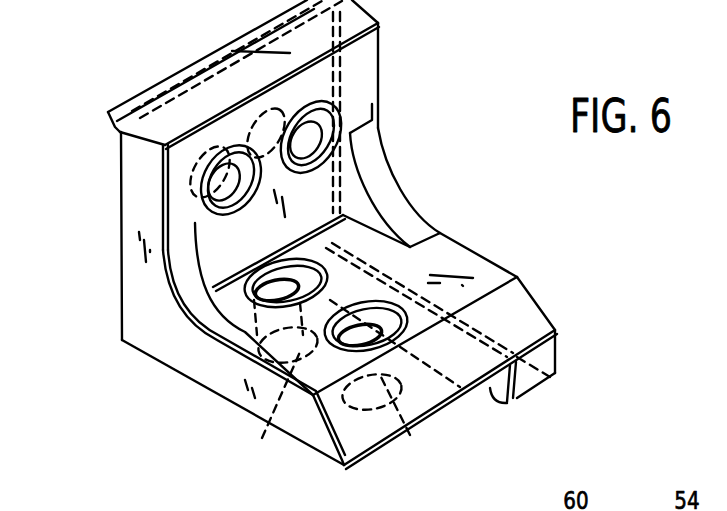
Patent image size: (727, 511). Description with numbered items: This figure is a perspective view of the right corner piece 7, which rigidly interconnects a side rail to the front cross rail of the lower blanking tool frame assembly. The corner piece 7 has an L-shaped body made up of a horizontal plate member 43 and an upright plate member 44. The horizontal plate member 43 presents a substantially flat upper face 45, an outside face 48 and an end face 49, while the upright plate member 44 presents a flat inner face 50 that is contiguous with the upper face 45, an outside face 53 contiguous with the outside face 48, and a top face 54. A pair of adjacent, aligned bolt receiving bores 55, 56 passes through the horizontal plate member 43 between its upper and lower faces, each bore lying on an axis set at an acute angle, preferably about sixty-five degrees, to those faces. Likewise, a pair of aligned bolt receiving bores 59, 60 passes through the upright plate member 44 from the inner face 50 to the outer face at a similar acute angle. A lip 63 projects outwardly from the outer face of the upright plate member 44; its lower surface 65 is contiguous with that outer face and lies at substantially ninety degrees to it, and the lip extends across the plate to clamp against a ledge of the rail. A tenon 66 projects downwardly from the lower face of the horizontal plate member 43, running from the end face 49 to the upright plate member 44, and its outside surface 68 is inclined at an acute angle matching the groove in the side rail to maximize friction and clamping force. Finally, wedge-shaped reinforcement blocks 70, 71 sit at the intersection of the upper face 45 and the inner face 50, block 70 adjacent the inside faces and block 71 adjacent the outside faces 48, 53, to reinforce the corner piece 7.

The right corner piece 7 is at (480, 48).
The horizontal plate member 43 is at (538, 298).
The upright plate member 44 is at (120, 257).
The upper face 45 is at (462, 262).
The outside face 48 is at (220, 372).
The end face 49 is at (443, 407).
The inner face 50 is at (363, 87).
The outside face 53 is at (138, 192).
The top face 54 is at (352, 14).
The bolt receiving bore 55 is at (400, 410).
The bolt receiving bore 56 is at (263, 430).
The bolt receiving bore 59 is at (300, 137).
The bolt receiving bore 60 is at (226, 165).
The lip 63 is at (108, 113).
The lower surface 65 is at (118, 130).
The tenon 66 is at (532, 386).
The outside surface 68 is at (490, 389).
The reinforcement block 70 is at (407, 192).
The reinforcement block 71 is at (207, 320).